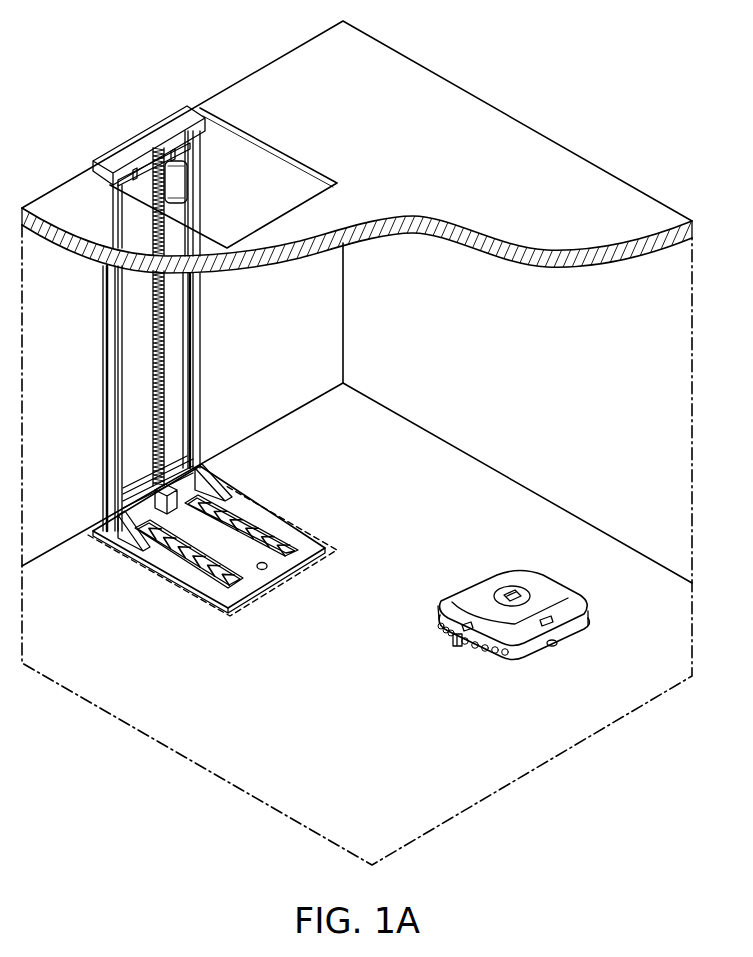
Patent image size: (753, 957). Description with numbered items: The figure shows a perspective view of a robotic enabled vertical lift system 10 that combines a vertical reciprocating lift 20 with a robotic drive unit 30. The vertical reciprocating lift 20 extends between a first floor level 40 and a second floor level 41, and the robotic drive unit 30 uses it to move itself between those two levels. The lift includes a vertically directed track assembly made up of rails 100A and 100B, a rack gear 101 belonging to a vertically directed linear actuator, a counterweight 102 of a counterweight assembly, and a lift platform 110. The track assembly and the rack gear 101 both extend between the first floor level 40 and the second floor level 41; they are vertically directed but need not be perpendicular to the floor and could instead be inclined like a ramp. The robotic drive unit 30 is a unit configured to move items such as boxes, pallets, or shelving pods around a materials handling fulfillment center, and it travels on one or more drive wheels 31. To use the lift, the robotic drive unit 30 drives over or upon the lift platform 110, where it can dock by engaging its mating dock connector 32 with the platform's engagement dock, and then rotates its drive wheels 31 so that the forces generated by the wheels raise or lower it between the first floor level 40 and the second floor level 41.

The robotic enabled vertical lift system 10 is at (376, 443).
The second floor level 41 is at (542, 185).
The first floor level 40 is at (372, 783).
The vertical reciprocating lift 20 is at (195, 361).
The counterweight 102 is at (172, 186).
The rail 100A is at (198, 405).
The rail 100B is at (115, 418).
The rack gear 101 is at (163, 370).
The lift platform 110 is at (291, 515).
The robotic drive unit 30 is at (517, 611).
The drive wheels 31 is at (553, 647).
The mating dock connector 32 is at (458, 648).